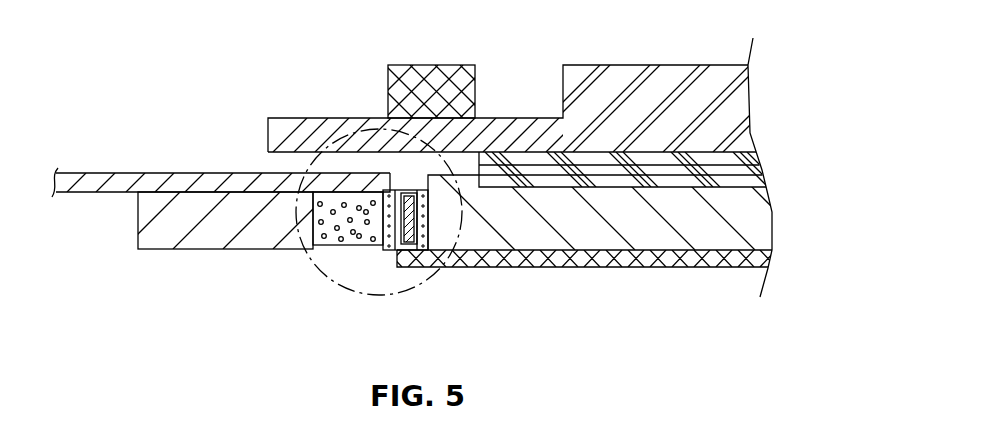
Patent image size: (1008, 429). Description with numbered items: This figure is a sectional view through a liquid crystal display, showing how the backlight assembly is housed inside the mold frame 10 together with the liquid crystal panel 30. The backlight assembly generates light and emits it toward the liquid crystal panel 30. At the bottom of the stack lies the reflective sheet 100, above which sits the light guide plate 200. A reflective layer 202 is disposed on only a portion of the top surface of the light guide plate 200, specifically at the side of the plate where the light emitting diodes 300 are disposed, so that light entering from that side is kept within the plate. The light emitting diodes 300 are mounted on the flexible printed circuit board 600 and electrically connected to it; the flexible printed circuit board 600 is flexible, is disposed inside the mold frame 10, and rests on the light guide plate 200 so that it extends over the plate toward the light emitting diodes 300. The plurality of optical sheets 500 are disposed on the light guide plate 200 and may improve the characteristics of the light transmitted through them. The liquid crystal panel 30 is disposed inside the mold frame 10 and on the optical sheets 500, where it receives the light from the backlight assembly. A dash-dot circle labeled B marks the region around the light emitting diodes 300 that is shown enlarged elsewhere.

The flexible printed circuit board 600 is at (128, 182).
The mold frame 10 is at (183, 233).
The light emitting diodes 300 is at (352, 237).
The reflective sheet 100 is at (495, 258).
The light guide plate 200 is at (580, 228).
The optical sheets 500 is at (657, 167).
The liquid crystal panel 30 is at (652, 83).
The reflective layer 202 is at (447, 180).
The enlarged region B is at (332, 138).